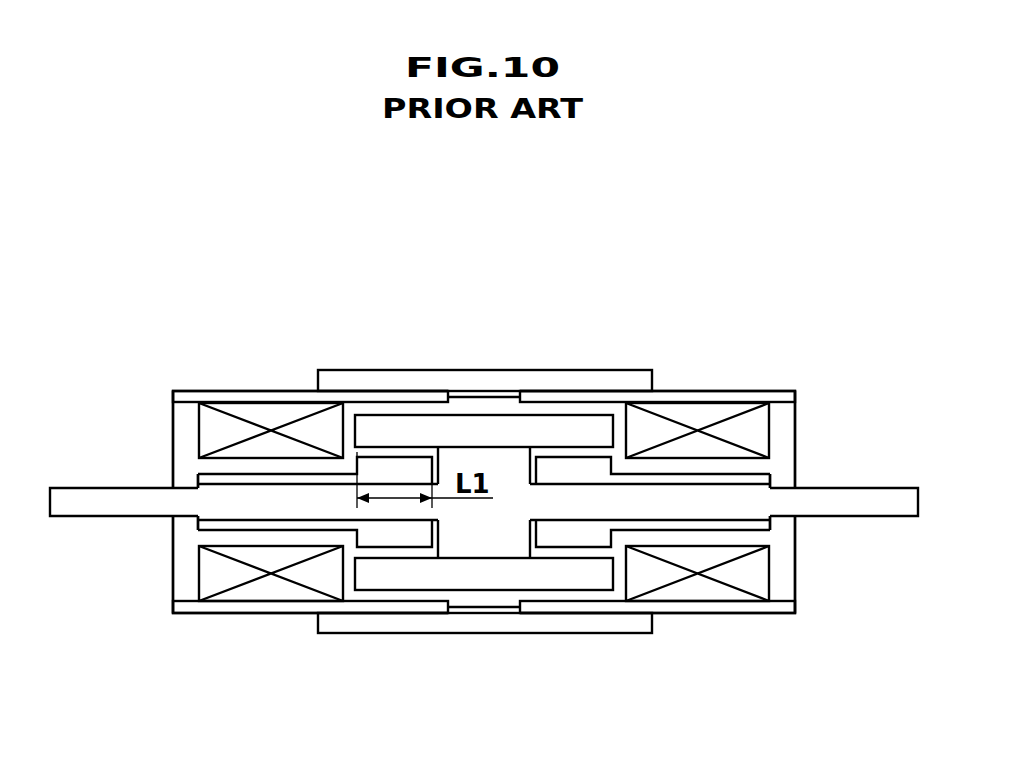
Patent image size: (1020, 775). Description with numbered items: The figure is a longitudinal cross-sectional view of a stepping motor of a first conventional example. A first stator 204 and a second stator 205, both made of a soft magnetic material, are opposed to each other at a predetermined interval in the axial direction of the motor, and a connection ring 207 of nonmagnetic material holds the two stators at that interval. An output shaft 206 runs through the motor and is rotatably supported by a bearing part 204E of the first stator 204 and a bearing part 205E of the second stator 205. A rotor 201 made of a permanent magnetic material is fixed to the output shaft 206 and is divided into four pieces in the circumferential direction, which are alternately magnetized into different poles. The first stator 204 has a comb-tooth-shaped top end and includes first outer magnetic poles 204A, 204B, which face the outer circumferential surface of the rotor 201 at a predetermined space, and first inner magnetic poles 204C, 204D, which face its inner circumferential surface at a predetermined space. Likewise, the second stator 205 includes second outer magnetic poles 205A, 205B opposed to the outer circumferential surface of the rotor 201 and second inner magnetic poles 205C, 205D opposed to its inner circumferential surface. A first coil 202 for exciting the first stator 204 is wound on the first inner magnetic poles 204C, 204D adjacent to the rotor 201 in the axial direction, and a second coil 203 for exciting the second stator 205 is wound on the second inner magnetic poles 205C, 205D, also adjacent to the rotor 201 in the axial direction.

The rotor 201 is at (498, 580).
The first coil 202 is at (270, 592).
The second coil 203 is at (715, 593).
The first stator 204 is at (232, 391).
The first outer magnetic pole 204A is at (418, 391).
The first outer magnetic pole 204B is at (410, 612).
The first inner magnetic pole 204C is at (392, 465).
The first inner magnetic pole 204D is at (394, 542).
The bearing part 204E is at (187, 518).
The second stator 205 is at (745, 391).
The second outer magnetic pole 205A is at (588, 398).
The second outer magnetic pole 205B is at (614, 607).
The second inner magnetic pole 205C is at (578, 462).
The second inner magnetic pole 205D is at (552, 545).
The bearing part 205E is at (792, 487).
The output shaft 206 is at (85, 505).
The connection ring 207 is at (493, 384).